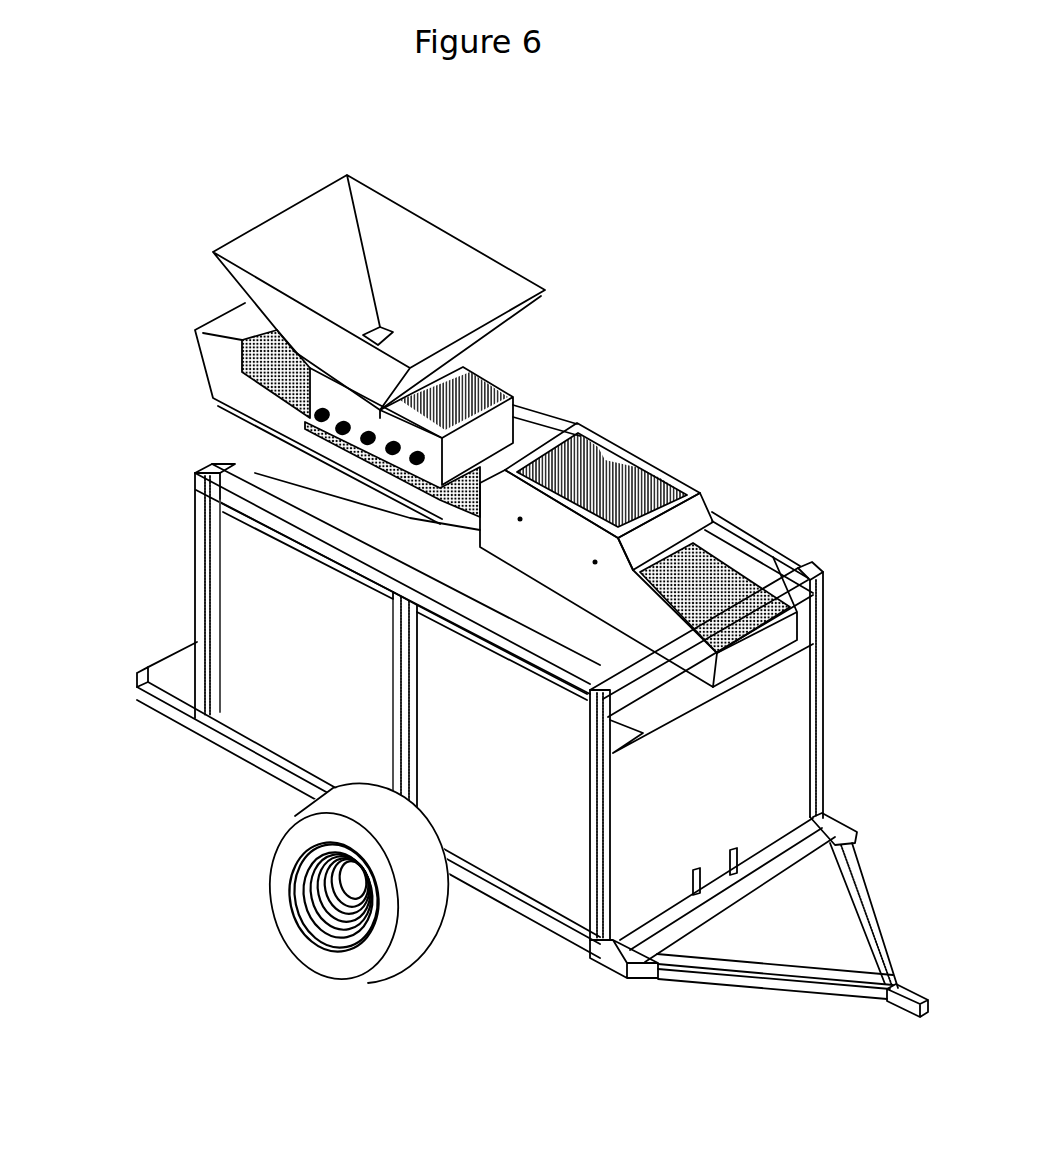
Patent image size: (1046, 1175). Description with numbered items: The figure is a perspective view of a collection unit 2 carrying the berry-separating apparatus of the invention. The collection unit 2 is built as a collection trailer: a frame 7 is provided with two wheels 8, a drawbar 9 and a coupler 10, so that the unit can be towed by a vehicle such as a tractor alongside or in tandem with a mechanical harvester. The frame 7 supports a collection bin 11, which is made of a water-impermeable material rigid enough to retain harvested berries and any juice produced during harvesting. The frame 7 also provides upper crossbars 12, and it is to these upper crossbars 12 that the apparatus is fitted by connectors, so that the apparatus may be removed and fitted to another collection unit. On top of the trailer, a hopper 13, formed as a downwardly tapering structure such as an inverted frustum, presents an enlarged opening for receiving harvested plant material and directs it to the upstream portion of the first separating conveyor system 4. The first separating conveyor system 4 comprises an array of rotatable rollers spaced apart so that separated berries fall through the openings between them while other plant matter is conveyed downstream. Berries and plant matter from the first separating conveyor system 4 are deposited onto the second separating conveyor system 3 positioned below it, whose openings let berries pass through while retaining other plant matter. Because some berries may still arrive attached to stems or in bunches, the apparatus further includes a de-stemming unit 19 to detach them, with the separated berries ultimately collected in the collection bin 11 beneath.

The collection unit 2 is at (832, 691).
The second separating conveyor system 3 is at (250, 333).
The first separating conveyor system 4 is at (531, 376).
The frame 7 is at (592, 913).
The wheels 8 is at (420, 927).
The drawbar 9 is at (866, 908).
The coupler 10 is at (908, 990).
The collection bin 11 is at (257, 647).
The upper crossbars 12 is at (233, 455).
The hopper 13 is at (415, 258).
The de-stemming unit 19 is at (661, 450).